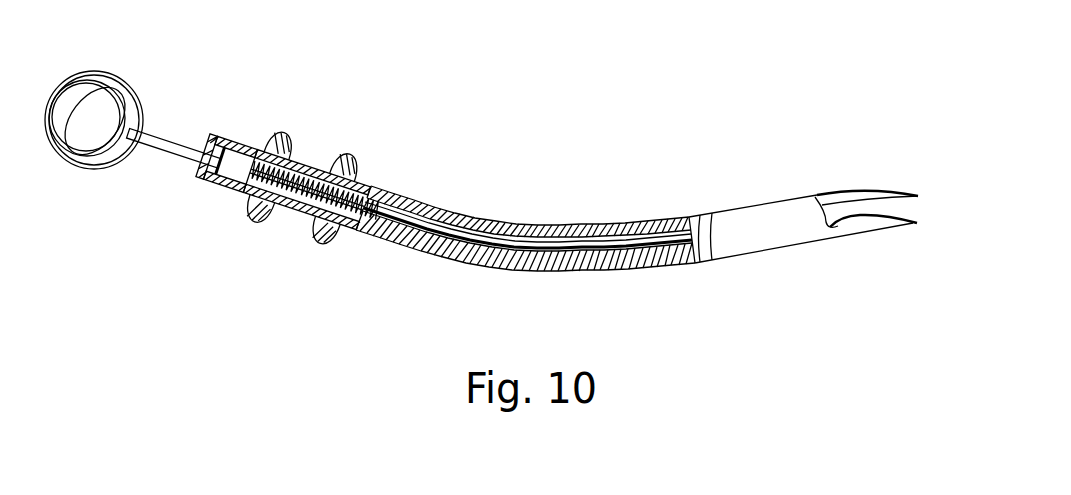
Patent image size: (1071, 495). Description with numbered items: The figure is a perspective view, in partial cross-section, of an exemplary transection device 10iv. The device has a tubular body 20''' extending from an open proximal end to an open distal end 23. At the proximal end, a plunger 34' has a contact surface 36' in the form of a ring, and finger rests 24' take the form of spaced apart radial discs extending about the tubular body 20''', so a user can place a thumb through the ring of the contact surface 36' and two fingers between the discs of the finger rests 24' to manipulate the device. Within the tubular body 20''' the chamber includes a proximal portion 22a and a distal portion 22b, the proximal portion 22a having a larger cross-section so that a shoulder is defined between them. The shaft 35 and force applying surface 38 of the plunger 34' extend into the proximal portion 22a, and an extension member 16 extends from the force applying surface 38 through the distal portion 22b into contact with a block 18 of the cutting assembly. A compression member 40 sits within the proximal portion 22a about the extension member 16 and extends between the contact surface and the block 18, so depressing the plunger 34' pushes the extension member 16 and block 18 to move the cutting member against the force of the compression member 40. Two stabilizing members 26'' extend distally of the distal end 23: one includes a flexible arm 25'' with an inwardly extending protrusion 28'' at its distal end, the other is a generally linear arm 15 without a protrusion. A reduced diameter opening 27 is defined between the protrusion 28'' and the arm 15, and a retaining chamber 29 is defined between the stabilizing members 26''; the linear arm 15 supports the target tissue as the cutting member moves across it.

The transection device 10iv is at (545, 128).
The plunger 34' is at (233, 169).
The contact surface 36' is at (94, 156).
The shaft 35 is at (173, 148).
The force applying surface 38 is at (240, 157).
The compression member 40 is at (290, 200).
The proximal portion 22a is at (328, 170).
The finger rests 24' is at (310, 182).
The tubular body 20''' is at (525, 227).
The extension member 16 is at (473, 213).
The distal portion 22b is at (583, 227).
The block 18 is at (693, 250).
The distal end 23 is at (797, 197).
The linear arm 15 is at (892, 190).
The stabilizing members 26'' is at (875, 221).
The retaining chamber 29 is at (830, 204).
The flexible arm 25'' is at (875, 253).
The protrusion 28'' is at (878, 259).
The reduced diameter opening 27 is at (905, 208).